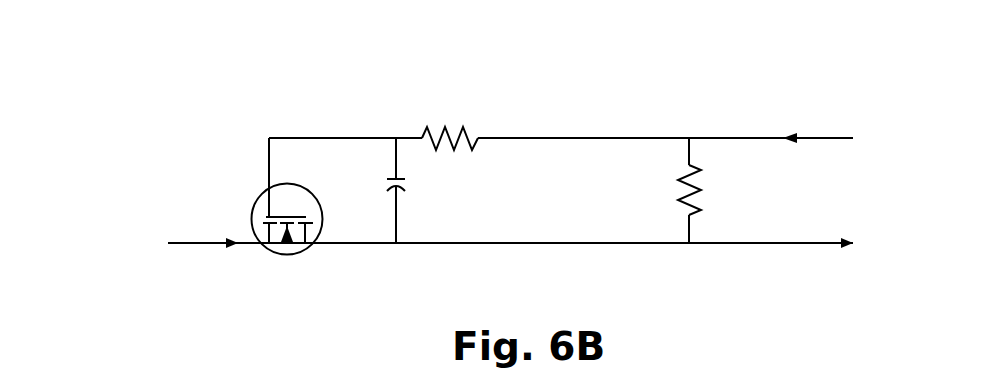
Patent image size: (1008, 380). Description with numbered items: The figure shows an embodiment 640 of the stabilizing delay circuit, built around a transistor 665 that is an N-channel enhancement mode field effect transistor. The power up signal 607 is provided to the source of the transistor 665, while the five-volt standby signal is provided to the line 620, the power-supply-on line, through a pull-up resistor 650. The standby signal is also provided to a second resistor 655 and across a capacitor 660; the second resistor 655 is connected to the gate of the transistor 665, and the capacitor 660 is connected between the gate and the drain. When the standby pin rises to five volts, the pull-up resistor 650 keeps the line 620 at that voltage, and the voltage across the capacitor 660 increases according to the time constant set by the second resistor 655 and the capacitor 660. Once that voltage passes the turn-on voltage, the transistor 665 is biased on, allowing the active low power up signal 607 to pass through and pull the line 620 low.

The embodiment of the delay circuit and stabilizer circuit 640 is at (783, 43).
The resistor R2 655 is at (460, 122).
The capacitor C1 660 is at (422, 190).
The pull-up resistor R1 650 is at (705, 190).
The transistor T1 665 is at (300, 278).
The power up signal# input 607 is at (195, 242).
The line (PS-ON#) 620 is at (765, 243).